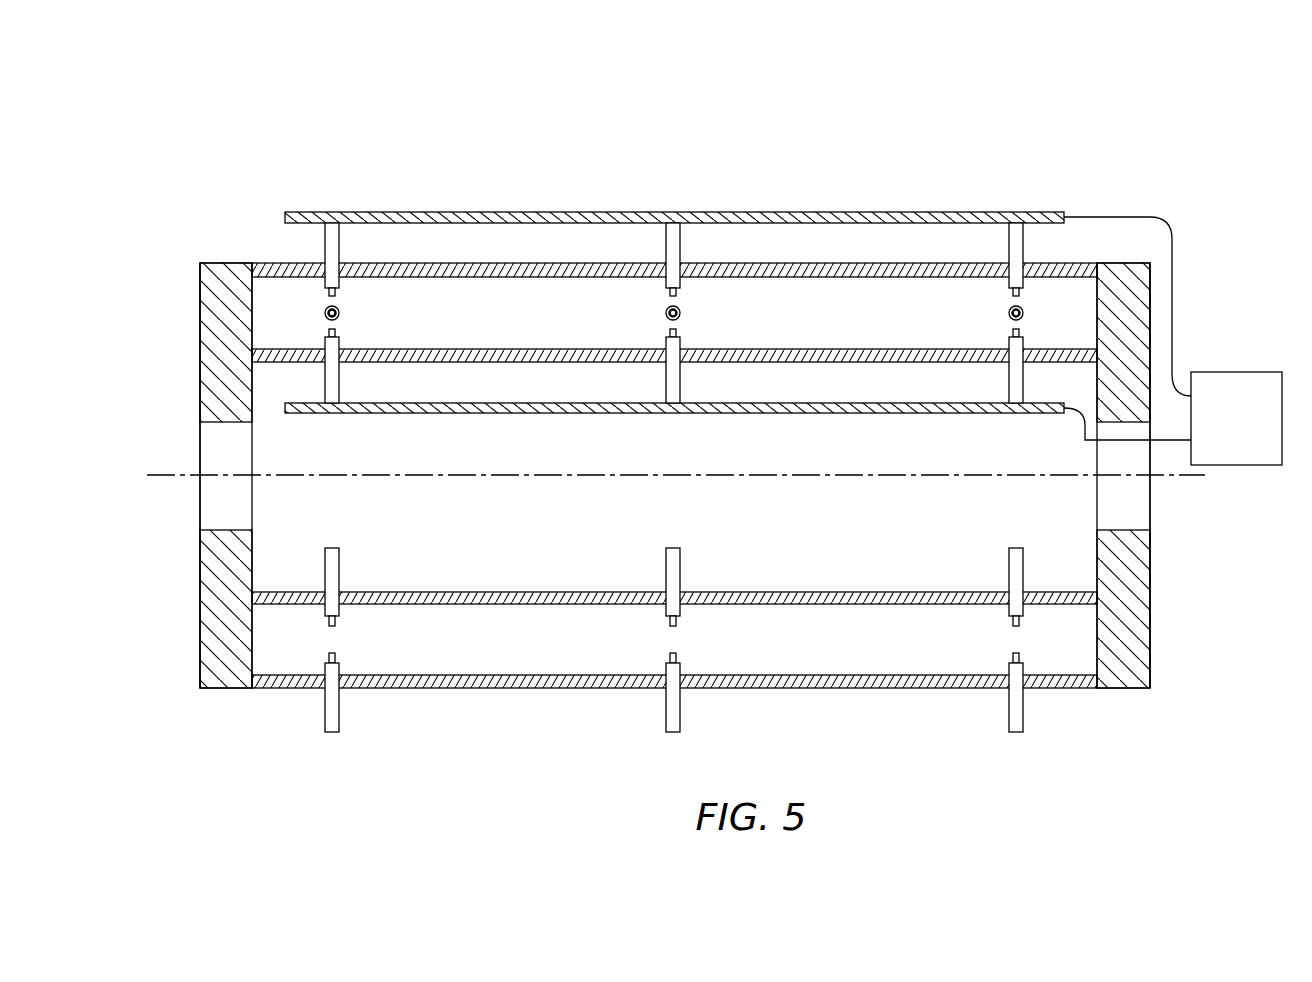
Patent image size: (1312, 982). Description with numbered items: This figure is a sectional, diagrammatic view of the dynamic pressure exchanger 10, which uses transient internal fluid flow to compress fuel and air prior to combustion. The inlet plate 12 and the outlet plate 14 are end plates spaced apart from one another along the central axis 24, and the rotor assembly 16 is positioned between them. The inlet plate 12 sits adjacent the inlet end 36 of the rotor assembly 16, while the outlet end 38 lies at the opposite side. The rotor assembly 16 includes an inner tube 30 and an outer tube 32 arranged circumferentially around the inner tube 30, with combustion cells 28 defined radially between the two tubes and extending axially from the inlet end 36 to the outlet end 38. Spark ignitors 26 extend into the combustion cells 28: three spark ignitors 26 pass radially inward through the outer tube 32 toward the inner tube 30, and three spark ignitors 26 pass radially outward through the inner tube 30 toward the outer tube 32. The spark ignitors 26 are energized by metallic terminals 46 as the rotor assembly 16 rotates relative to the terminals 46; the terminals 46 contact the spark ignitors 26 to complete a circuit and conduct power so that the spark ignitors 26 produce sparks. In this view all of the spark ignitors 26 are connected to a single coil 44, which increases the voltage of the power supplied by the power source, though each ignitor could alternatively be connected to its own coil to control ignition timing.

The dynamic pressure exchanger 10 is at (956, 90).
The inlet plate 12 is at (210, 252).
The outlet plate 14 is at (1177, 595).
The rotor assembly 16 is at (559, 162).
The central axis 24 is at (163, 478).
The spark ignitors 26 is at (339, 242).
The combustion cells 28 is at (276, 310).
The inner tube 30 is at (276, 362).
The outer tube 32 is at (270, 262).
The inlet end 36 is at (133, 258).
The outlet end 38 is at (1240, 203).
The coil 44 is at (1232, 372).
The terminals 46 is at (775, 211).